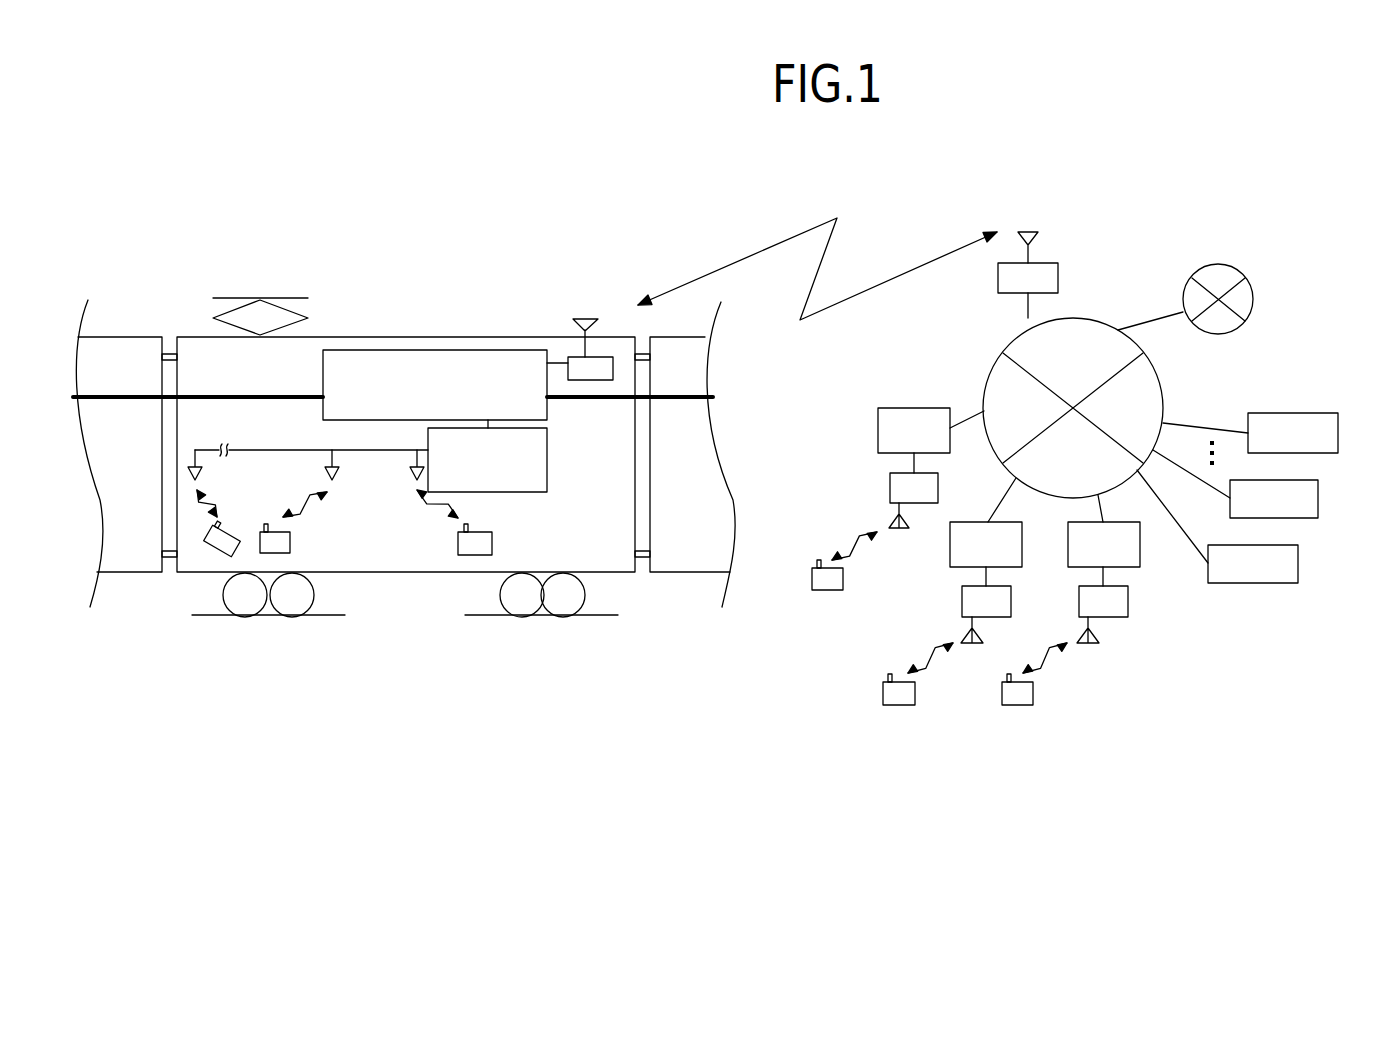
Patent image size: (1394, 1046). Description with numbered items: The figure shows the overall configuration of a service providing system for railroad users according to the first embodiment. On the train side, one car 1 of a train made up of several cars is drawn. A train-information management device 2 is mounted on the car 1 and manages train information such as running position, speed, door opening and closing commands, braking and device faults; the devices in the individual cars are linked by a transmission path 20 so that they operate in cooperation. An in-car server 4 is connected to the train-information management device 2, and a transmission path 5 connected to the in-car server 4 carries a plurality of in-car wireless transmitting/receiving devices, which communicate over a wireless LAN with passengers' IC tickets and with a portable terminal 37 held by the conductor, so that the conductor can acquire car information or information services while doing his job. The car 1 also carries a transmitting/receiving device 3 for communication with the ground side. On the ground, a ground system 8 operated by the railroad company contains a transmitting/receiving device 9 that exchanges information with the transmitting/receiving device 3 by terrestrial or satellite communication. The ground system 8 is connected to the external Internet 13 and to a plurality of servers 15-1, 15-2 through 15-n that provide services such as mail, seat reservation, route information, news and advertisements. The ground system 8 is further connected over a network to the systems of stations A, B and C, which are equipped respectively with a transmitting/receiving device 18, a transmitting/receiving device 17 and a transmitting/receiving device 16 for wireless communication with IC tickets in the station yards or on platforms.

The car 1 is at (413, 337).
The train-information management device 2 is at (547, 408).
The transmitting/receiving device 3 is at (600, 357).
The in-car server 4 is at (547, 457).
The transmission path 5 is at (260, 450).
The ground system 8 is at (1160, 375).
The transmitting/receiving device 9 is at (1058, 279).
The external Internet 13 is at (1253, 298).
The server 15-n is at (1338, 433).
The server 15-2 is at (1318, 497).
The server 15-1 is at (1298, 563).
The transmitting/receiving device 16 is at (890, 486).
The transmitting/receiving device 17 is at (1011, 600).
The transmitting/receiving device 18 is at (1128, 600).
The transmission path 20 is at (268, 397).
The portable terminal 37 is at (212, 553).